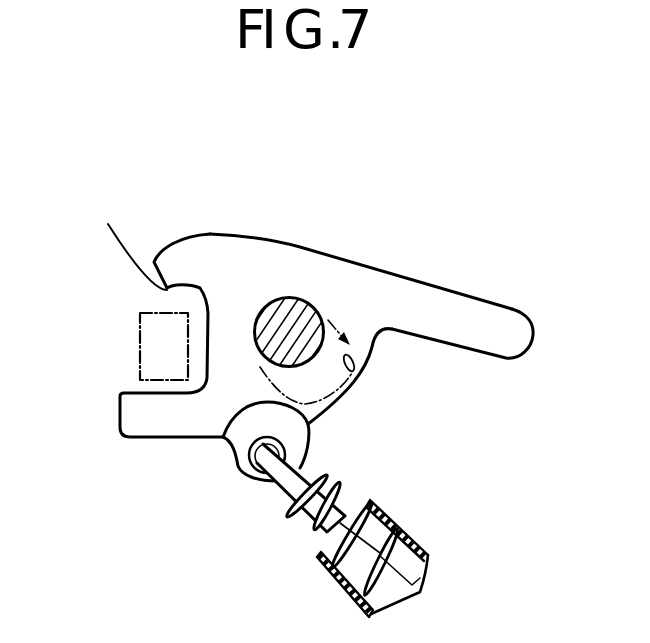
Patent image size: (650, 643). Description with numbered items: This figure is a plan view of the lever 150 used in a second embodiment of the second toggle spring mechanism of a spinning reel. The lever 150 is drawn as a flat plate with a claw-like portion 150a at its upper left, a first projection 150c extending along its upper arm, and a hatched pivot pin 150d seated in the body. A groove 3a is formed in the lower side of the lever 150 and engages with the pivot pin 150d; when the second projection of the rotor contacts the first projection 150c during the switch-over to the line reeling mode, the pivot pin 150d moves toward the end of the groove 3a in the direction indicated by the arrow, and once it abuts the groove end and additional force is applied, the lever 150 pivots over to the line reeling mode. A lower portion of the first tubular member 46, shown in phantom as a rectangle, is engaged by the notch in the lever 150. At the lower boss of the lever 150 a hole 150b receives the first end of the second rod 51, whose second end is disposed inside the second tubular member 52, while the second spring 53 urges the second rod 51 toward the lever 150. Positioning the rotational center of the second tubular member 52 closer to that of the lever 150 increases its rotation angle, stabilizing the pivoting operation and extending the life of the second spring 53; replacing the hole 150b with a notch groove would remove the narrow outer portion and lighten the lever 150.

The lever 150 is at (306, 250).
The engaging claw portion of lever 150a is at (136, 238).
The hole 150b is at (245, 471).
The first projection 150c is at (461, 322).
The pivot pin 150d is at (314, 304).
The first tubular member 46 is at (140, 337).
The groove 3a is at (355, 371).
The second rod 51 is at (347, 520).
The second tubular member 52 is at (420, 592).
The second spring 53 is at (335, 581).